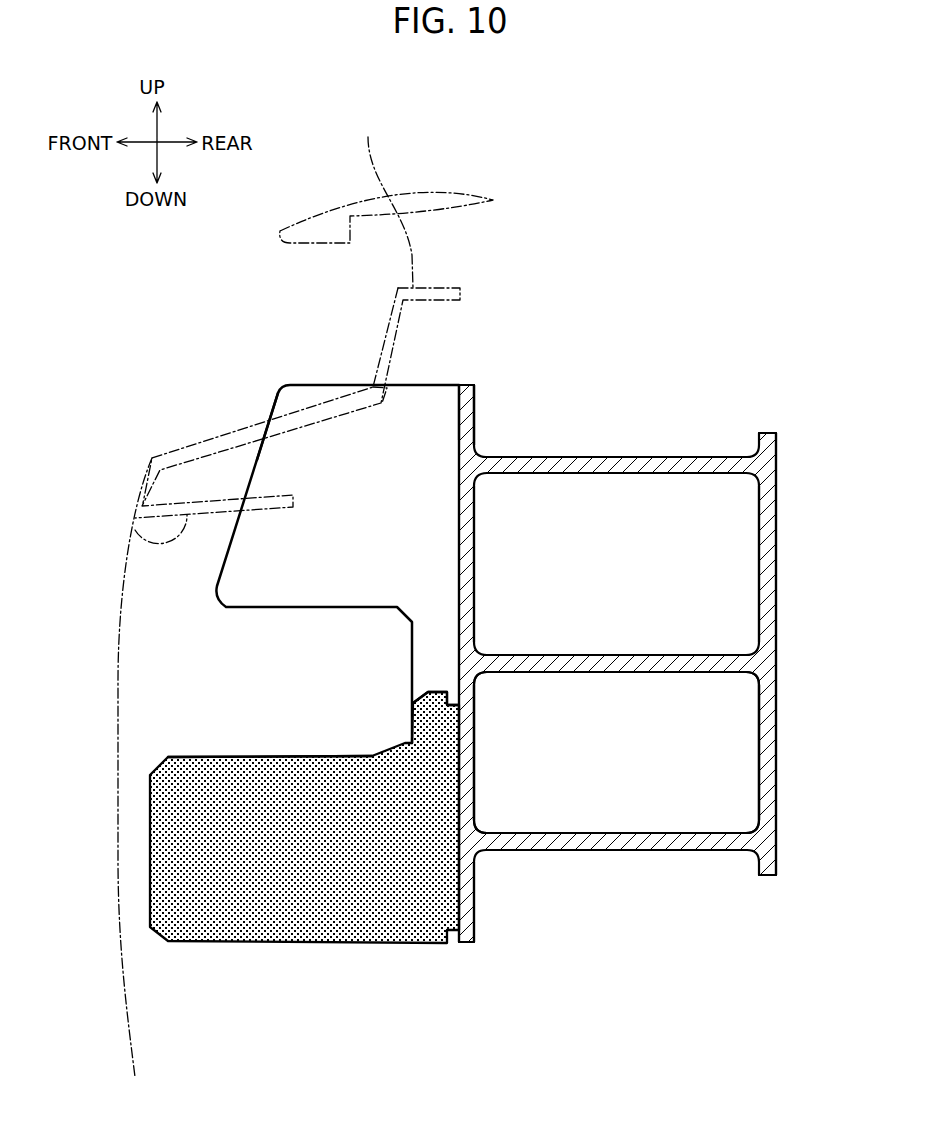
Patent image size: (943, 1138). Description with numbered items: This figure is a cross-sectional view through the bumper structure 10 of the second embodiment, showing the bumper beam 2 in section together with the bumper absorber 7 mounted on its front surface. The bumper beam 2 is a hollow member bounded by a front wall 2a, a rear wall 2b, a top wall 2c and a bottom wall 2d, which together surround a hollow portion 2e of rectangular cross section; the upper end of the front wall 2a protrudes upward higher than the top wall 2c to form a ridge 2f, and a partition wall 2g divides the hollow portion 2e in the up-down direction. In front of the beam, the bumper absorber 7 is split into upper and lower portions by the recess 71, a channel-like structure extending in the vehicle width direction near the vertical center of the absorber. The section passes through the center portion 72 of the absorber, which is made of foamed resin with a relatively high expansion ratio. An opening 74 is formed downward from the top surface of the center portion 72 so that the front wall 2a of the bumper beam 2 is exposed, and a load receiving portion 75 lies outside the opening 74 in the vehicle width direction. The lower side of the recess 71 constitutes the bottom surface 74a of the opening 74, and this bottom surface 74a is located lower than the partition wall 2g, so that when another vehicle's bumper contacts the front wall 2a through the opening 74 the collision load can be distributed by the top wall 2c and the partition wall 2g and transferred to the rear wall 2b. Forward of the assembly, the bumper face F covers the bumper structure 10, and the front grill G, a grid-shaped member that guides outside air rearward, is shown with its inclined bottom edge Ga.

The bumper structure 10 is at (585, 309).
The bumper beam 2 is at (773, 420).
The front wall 2a is at (458, 548).
The rear wall 2b is at (777, 545).
The top wall 2c is at (625, 457).
The bottom wall 2d is at (625, 851).
The hollow portion 2e is at (759, 755).
The ridge 2f is at (469, 384).
The partition wall 2g is at (622, 655).
The bumper absorber 7 is at (308, 968).
The recess 71 is at (305, 609).
The center portion 72 is at (150, 842).
The opening 74 is at (442, 691).
The bottom surface 74a is at (243, 756).
The load receiving portion 75 is at (252, 458).
The front grill G is at (433, 193).
The bottom edge Ga is at (132, 530).
The bumper face F is at (122, 952).